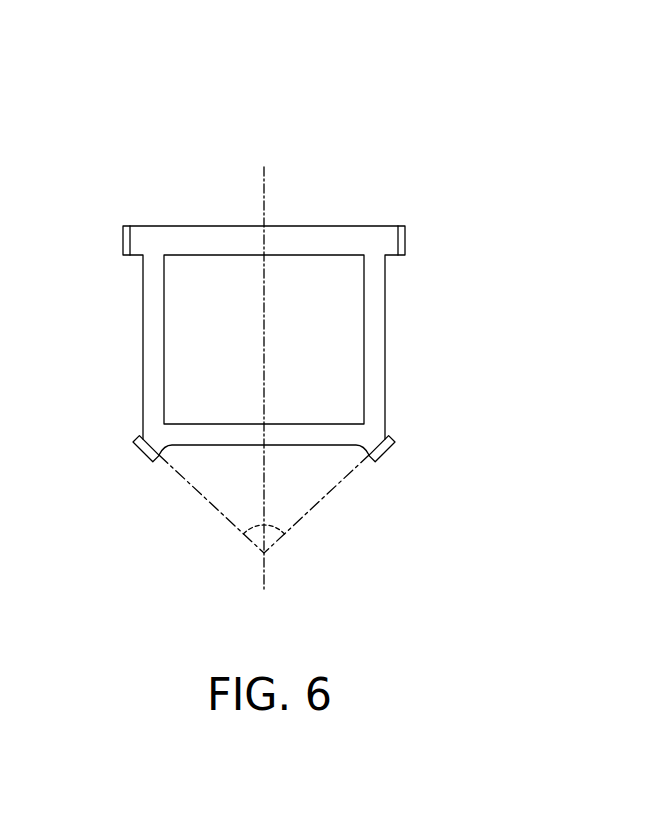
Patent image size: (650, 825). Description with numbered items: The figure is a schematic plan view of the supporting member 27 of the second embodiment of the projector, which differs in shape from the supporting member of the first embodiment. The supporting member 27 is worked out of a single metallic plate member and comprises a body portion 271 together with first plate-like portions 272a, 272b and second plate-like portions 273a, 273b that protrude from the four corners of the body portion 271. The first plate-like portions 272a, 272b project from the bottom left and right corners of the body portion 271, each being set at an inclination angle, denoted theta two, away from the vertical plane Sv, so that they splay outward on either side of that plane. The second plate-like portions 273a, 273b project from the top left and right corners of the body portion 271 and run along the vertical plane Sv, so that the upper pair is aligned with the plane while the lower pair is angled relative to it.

The supporting member 27 is at (406, 95).
The body portion 271 is at (377, 380).
The first plate-like portion 272a is at (382, 459).
The first plate-like portion 272b is at (144, 456).
The second plate-like portion 273a is at (402, 243).
The second plate-like portion 273b is at (126, 243).
The vertical plane Sv is at (264, 202).